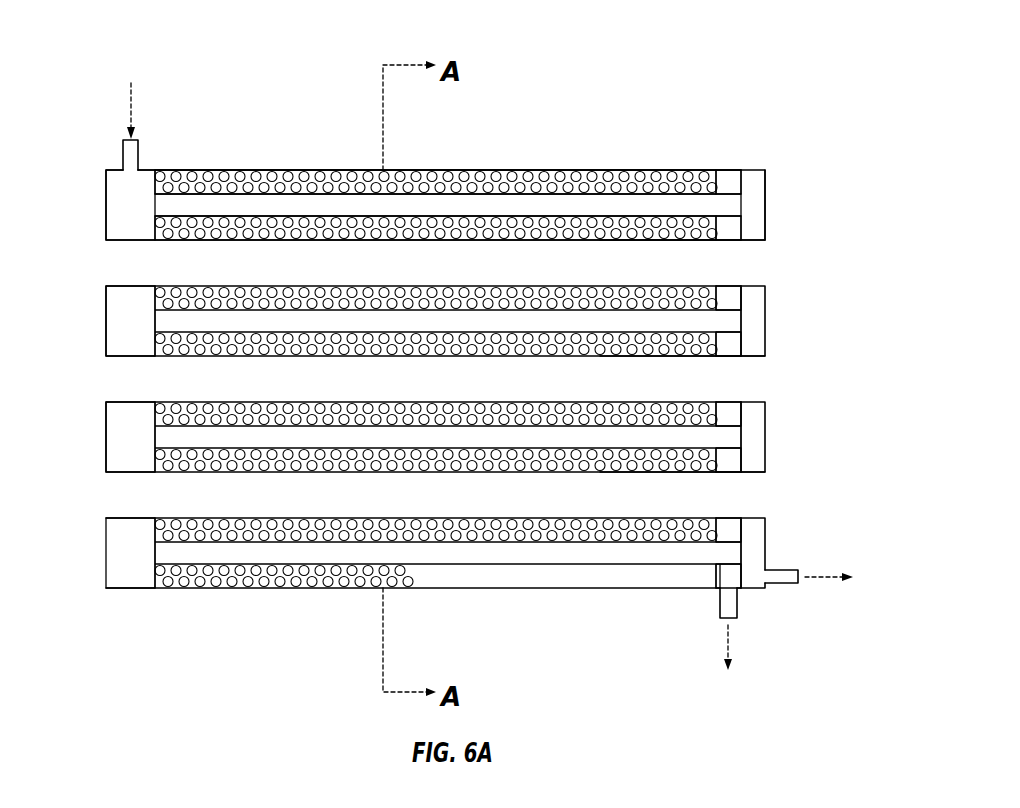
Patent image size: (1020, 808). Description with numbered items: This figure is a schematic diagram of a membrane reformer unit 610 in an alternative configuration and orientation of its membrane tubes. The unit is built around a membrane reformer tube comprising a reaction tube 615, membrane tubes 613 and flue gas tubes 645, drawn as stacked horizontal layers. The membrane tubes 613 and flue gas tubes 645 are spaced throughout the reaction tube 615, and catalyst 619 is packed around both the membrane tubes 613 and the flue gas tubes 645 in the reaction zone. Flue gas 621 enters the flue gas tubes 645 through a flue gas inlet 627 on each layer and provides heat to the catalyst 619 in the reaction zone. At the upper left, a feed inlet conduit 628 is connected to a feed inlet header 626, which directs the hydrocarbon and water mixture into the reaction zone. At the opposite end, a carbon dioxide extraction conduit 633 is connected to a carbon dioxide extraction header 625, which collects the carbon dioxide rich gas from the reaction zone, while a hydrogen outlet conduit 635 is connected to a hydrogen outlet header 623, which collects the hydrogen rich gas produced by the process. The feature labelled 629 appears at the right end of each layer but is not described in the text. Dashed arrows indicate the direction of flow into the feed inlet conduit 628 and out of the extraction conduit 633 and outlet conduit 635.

The membrane reformer unit 610 is at (632, 46).
The membrane tubes 613 is at (492, 205).
The reaction tube 615 is at (520, 171).
The catalyst 619 is at (208, 177).
The flue gas 621 is at (114, 260).
The H2 outlet header 623 is at (752, 168).
The CO2 extraction header 625 is at (727, 168).
The feed inlet header 626 is at (128, 207).
The flue gas inlet 627 is at (103, 284).
The feed inlet conduit 628 is at (134, 140).
The gap between cells 629 is at (760, 263).
The CO2 extraction conduit 633 is at (740, 603).
The H2 outlet conduit 635 is at (784, 569).
The flue gas tubes 645 is at (593, 236).